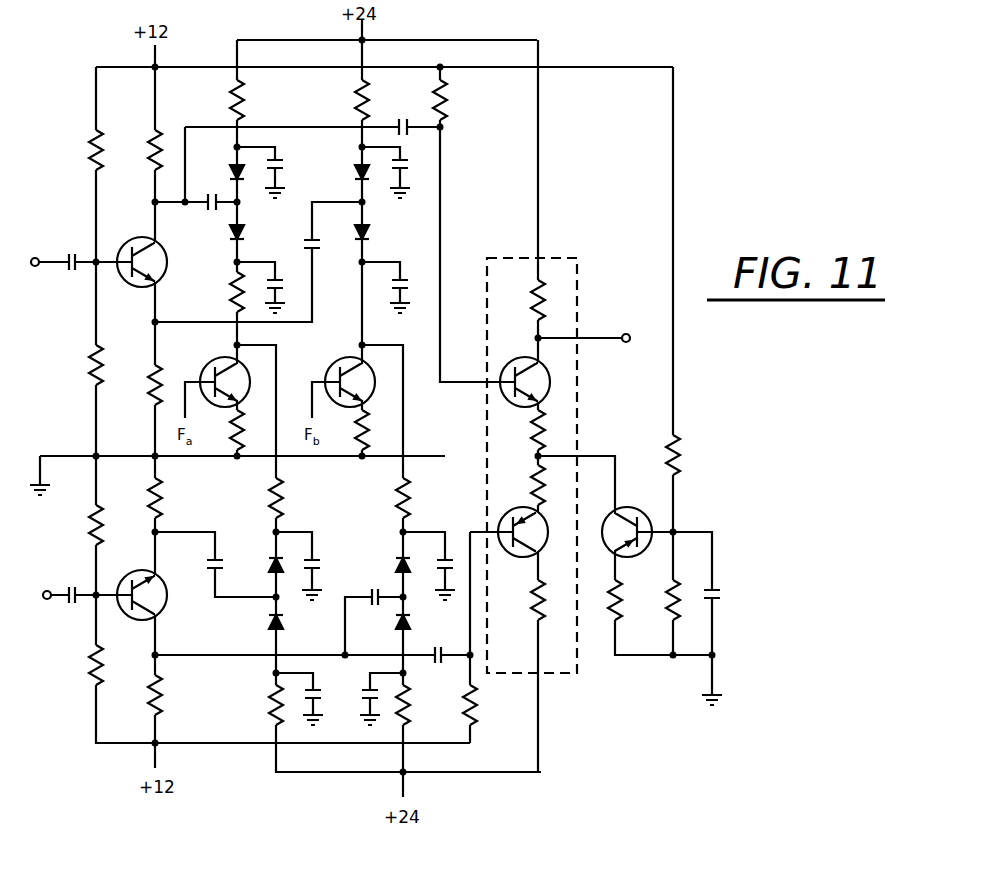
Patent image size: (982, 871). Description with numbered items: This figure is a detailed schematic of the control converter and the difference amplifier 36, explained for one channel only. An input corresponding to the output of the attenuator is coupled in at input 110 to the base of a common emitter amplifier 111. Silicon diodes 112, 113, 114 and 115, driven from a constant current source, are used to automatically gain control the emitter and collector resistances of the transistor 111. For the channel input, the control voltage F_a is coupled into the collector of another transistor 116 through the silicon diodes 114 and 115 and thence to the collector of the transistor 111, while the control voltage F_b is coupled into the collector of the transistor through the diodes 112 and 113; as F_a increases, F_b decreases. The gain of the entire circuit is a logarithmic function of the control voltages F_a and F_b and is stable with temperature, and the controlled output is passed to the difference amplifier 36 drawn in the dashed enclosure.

The input 110 is at (50, 243).
The common emitter amplifier 111 is at (163, 256).
The silicon diode 112 is at (357, 174).
The silicon diode 113 is at (371, 236).
The silicon diode 114 is at (231, 174).
The silicon diode 115 is at (246, 236).
The transistor 116 is at (217, 357).
The difference amplifier 36 is at (569, 258).